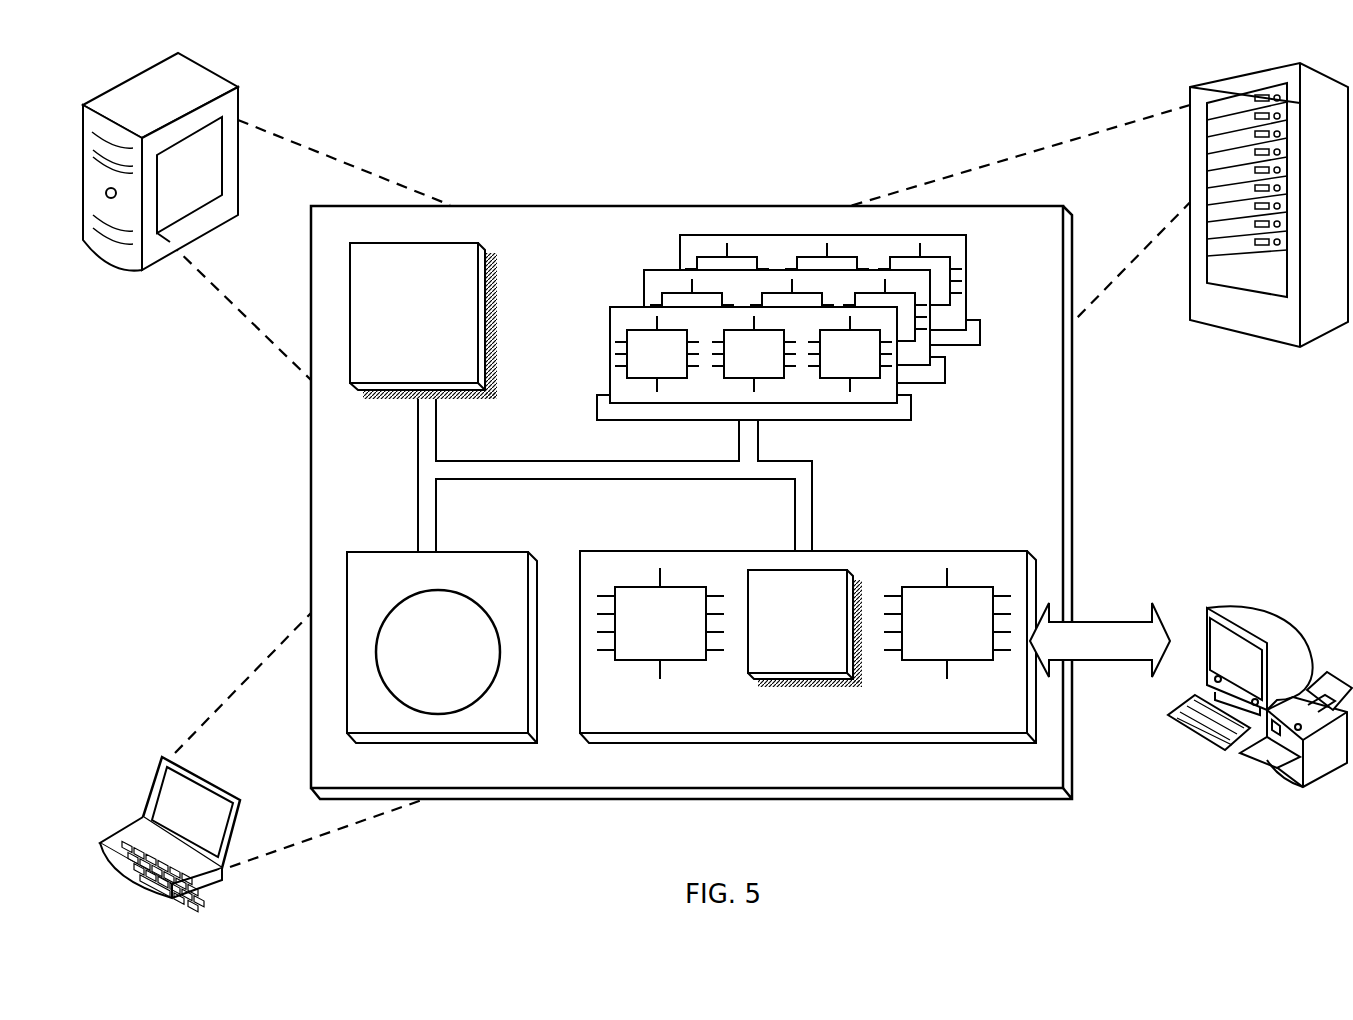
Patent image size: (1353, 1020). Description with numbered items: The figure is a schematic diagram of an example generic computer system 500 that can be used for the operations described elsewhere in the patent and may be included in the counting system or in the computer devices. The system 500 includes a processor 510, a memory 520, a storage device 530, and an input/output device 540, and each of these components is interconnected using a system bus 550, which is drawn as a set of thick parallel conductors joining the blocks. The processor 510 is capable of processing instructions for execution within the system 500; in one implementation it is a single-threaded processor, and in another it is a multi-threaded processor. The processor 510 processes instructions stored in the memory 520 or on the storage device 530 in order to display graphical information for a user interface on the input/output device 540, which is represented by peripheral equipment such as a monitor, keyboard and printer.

The generic computer system 500 is at (503, 78).
The processor 510 is at (423, 321).
The memory 520 is at (973, 376).
The storage device 530 is at (442, 647).
The input/output device 540 is at (1205, 610).
The system bus 550 is at (612, 481).